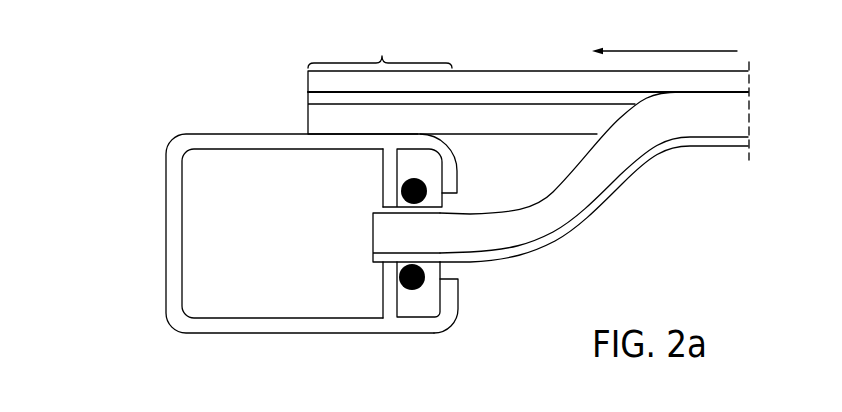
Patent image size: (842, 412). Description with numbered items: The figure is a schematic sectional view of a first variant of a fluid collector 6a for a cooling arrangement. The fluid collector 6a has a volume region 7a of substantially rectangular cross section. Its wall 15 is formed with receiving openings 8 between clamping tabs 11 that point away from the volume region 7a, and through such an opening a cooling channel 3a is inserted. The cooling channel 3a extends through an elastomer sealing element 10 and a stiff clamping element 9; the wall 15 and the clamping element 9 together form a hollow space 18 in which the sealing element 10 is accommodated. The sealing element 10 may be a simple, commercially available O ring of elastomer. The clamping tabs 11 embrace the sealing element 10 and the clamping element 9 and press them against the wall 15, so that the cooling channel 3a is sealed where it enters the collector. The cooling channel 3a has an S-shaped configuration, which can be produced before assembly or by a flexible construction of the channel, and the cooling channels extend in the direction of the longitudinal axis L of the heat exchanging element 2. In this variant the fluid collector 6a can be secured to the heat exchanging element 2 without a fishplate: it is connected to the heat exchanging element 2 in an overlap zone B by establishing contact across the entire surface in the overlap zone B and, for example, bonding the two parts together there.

The heat exchanging element 2 is at (657, 82).
The cooling channel 3a is at (675, 145).
The fluid collector 6a is at (154, 239).
The volume region 7a is at (220, 167).
The receiving opening 8 is at (386, 276).
The clamping element 9 is at (440, 299).
The sealing element 10 is at (405, 306).
The clamping tab 11 is at (469, 171).
The wall 15 is at (407, 167).
The hollow space 18 is at (418, 129).
The overlap zone B is at (380, 45).
The longitudinal axis L is at (664, 39).